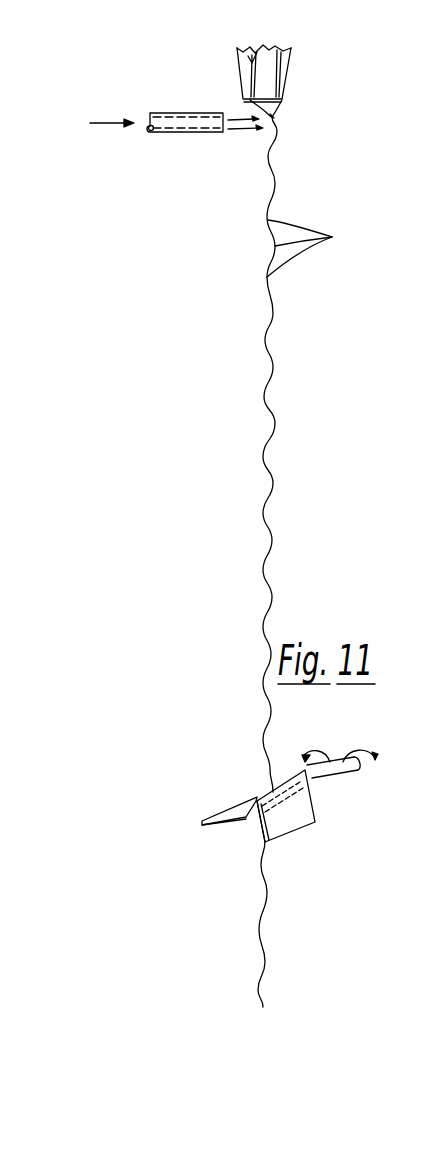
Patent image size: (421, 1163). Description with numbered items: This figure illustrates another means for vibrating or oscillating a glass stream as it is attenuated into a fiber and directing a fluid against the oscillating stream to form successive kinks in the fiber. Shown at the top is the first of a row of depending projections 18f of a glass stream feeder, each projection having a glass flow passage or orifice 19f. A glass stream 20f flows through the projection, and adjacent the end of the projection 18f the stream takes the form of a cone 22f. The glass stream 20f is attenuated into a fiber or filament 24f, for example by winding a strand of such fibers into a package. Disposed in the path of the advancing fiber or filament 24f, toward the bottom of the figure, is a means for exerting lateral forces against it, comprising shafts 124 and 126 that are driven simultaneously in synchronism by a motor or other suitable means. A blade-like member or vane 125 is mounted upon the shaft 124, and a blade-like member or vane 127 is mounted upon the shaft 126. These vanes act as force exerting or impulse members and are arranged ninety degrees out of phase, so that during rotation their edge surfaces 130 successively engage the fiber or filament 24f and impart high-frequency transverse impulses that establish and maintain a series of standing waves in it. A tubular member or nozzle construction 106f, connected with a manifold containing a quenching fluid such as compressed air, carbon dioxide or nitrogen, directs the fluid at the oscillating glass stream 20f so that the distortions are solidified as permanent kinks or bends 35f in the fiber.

The depending projection 18f is at (240, 66).
The glass flow passage or orifice 19f is at (263, 46).
The cone 22f is at (280, 100).
The glass stream 20f is at (274, 116).
The fiber or filament 24f is at (275, 182).
The kinks or bends 35f is at (322, 248).
The tubular member or nozzle construction 106f is at (203, 133).
The shaft 124 is at (359, 772).
The blade-like member or vane 125 is at (302, 808).
The shaft 126 is at (316, 764).
The blade-like member or vane 127 is at (238, 805).
The edge surfaces 130 is at (258, 798).